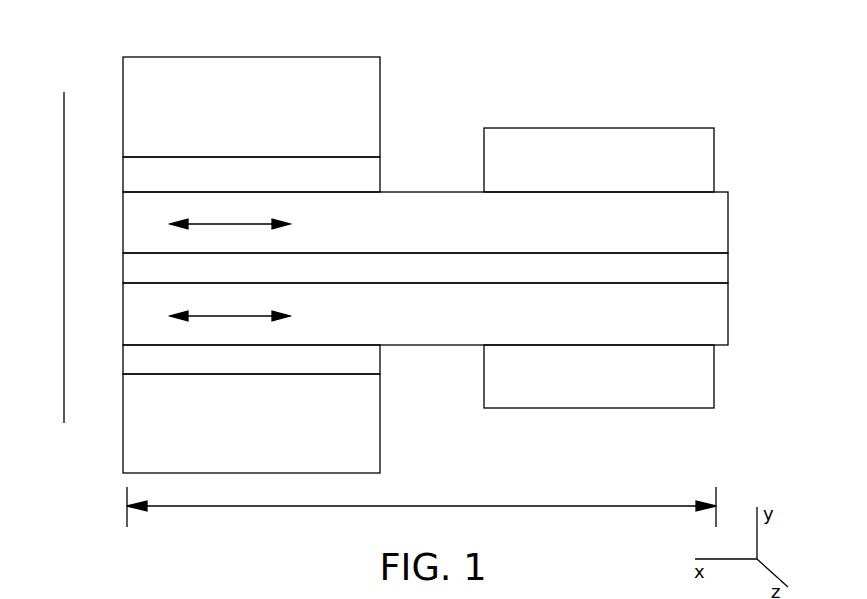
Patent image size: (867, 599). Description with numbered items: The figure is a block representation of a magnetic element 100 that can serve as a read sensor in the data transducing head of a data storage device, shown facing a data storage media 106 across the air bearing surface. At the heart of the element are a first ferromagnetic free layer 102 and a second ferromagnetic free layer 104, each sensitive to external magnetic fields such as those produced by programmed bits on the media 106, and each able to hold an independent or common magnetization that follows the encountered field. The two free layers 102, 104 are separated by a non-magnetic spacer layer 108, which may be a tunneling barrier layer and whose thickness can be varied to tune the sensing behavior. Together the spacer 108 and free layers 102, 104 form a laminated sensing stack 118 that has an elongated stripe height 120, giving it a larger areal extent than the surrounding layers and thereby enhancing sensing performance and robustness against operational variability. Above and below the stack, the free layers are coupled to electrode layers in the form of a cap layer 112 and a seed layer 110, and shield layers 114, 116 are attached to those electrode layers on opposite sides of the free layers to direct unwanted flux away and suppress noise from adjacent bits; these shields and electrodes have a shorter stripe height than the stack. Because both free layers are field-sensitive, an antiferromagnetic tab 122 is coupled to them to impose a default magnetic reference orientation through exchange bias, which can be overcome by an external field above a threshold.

The magnetic element 100 is at (705, 61).
The first ferromagnetic free layer 102 is at (425, 222).
The second ferromagnetic free layer 104 is at (425, 314).
The data storage media 106 is at (65, 434).
The non-magnetic spacer layer 108 is at (425, 268).
The seed layer 110 is at (380, 364).
The cap layer 112 is at (380, 180).
The shield layer 114 is at (380, 103).
The shield layer 116 is at (380, 430).
The laminated sensing stack 118 is at (735, 192).
The stripe height 120 is at (421, 508).
The antiferromagnetic (AFM) tab 122 is at (664, 132).